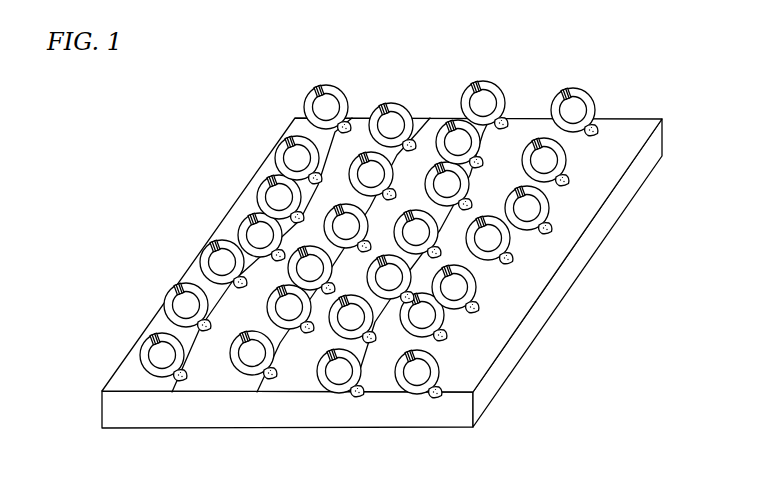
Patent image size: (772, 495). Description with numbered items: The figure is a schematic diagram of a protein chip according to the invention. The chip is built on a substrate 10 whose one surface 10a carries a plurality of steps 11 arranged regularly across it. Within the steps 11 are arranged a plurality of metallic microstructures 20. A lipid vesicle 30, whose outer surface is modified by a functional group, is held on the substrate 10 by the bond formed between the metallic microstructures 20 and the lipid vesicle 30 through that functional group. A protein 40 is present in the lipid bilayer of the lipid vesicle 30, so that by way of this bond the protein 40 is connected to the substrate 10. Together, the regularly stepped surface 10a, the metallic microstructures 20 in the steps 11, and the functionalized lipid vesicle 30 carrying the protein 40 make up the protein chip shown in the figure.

The substrate 10 is at (382, 272).
The one surface of the substrate 10a is at (627, 120).
The steps 11 is at (172, 393).
The metallic microstructures 20 is at (350, 126).
The lipid vesicle 30 is at (497, 84).
The protein 40 is at (478, 84).